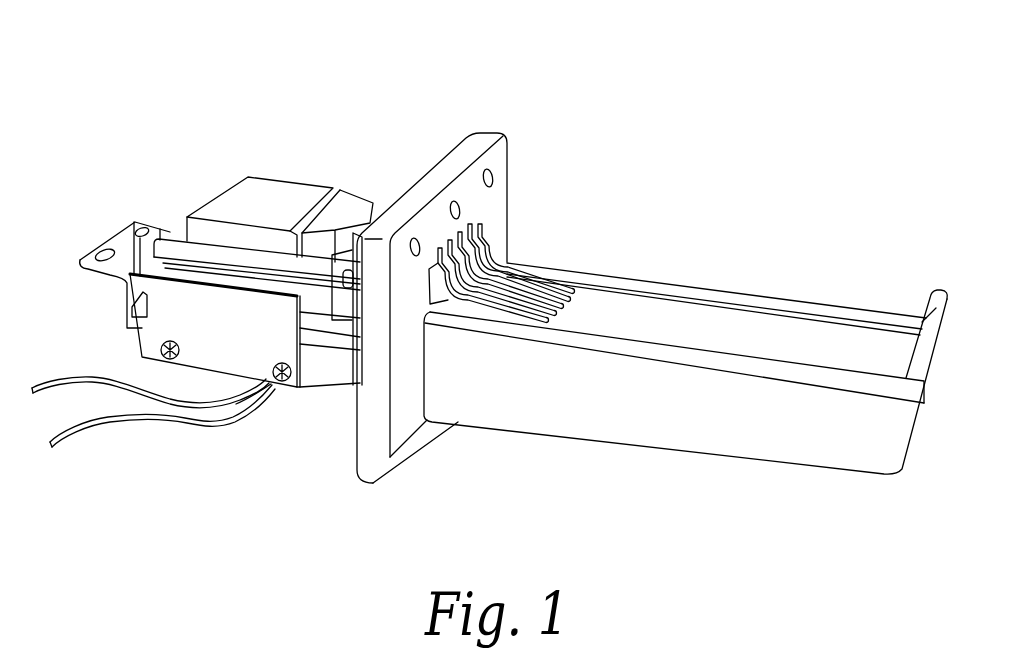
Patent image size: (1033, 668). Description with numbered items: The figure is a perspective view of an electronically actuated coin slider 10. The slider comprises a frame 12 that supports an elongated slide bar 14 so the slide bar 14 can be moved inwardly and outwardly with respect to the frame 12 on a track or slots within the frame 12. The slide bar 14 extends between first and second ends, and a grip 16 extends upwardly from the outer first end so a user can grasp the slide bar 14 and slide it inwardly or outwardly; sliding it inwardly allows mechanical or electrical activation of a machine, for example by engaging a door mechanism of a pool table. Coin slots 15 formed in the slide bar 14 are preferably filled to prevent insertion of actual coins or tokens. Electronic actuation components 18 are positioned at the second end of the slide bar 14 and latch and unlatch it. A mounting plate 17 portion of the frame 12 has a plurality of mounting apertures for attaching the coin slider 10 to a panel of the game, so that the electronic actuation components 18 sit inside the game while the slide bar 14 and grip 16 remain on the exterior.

The electronically actuated coin slider 10 is at (553, 90).
The frame 12 is at (530, 408).
The slide bar 14 is at (735, 332).
The coin slots 15 is at (548, 282).
The grip 16 is at (936, 311).
The mounting plate 17 is at (447, 166).
The electronic actuation components 18 is at (413, 172).